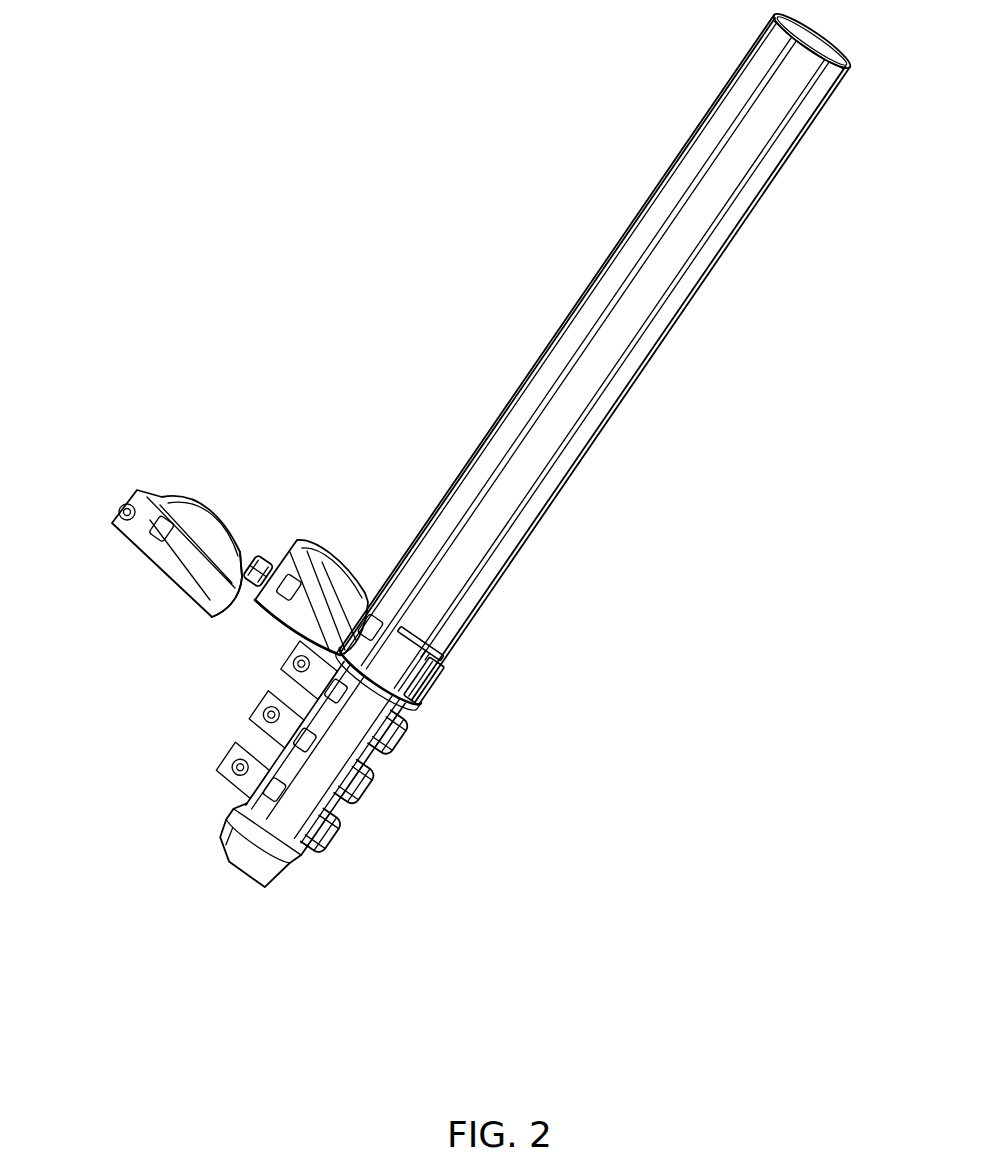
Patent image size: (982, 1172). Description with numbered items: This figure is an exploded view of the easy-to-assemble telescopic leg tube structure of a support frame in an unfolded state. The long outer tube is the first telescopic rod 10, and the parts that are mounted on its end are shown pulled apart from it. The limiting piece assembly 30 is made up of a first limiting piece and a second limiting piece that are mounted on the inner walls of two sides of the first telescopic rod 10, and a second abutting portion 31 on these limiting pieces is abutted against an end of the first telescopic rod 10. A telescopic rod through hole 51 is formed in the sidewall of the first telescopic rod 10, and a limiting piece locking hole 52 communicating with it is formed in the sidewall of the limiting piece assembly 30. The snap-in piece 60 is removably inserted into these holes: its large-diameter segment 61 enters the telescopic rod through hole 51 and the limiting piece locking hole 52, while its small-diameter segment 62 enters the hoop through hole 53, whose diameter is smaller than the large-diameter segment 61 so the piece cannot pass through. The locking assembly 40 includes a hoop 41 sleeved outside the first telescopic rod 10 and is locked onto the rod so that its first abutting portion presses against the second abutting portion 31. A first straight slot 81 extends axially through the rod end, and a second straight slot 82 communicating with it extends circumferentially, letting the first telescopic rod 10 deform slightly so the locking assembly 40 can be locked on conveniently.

The first telescopic rod 10 is at (622, 313).
The limiting piece assembly 30 is at (278, 610).
The second abutting portion 31 is at (290, 636).
The locking assembly 40 is at (352, 718).
The hoop 41 is at (240, 596).
The telescopic rod through hole 51 is at (382, 624).
The limiting piece locking hole 52 is at (289, 590).
The hoop through hole 53 is at (150, 532).
The snap-in piece 60 is at (250, 563).
The large-diameter segment 61 is at (266, 572).
The small-diameter segment 62 is at (257, 567).
The first straight slot 81 is at (430, 672).
The second straight slot 82 is at (442, 650).